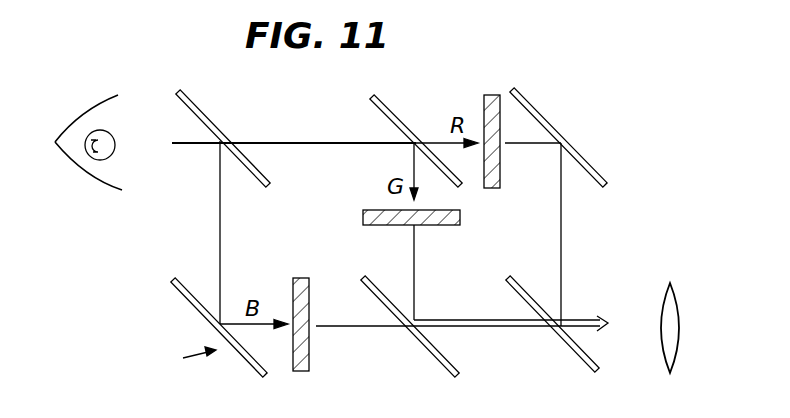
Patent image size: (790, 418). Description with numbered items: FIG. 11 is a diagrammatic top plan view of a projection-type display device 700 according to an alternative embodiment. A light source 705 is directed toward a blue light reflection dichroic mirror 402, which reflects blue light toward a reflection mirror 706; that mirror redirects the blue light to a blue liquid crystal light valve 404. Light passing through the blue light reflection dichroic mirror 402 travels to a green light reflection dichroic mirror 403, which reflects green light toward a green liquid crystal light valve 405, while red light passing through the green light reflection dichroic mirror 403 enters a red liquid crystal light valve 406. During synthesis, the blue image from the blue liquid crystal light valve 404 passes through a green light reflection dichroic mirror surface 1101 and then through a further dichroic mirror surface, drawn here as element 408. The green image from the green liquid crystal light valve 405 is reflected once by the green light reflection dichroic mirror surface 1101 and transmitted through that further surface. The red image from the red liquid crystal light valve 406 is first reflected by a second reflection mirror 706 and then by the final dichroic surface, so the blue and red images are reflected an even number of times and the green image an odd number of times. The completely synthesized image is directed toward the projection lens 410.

The light source 705 is at (83, 115).
The blue light reflection dichroic mirror 402 is at (197, 93).
The green light reflection dichroic mirror 403 is at (389, 110).
The red liquid crystal light valve 406 is at (490, 93).
The reflection mirror 706 is at (592, 169).
The green liquid crystal light valve 405 is at (362, 216).
The blue liquid crystal light valve 404 is at (300, 368).
The green light reflection dichroic mirror surface 1101 is at (438, 364).
The dichroic mirror 408 is at (593, 362).
The projection-type display device 700 is at (175, 358).
The projection lens 410 is at (677, 294).